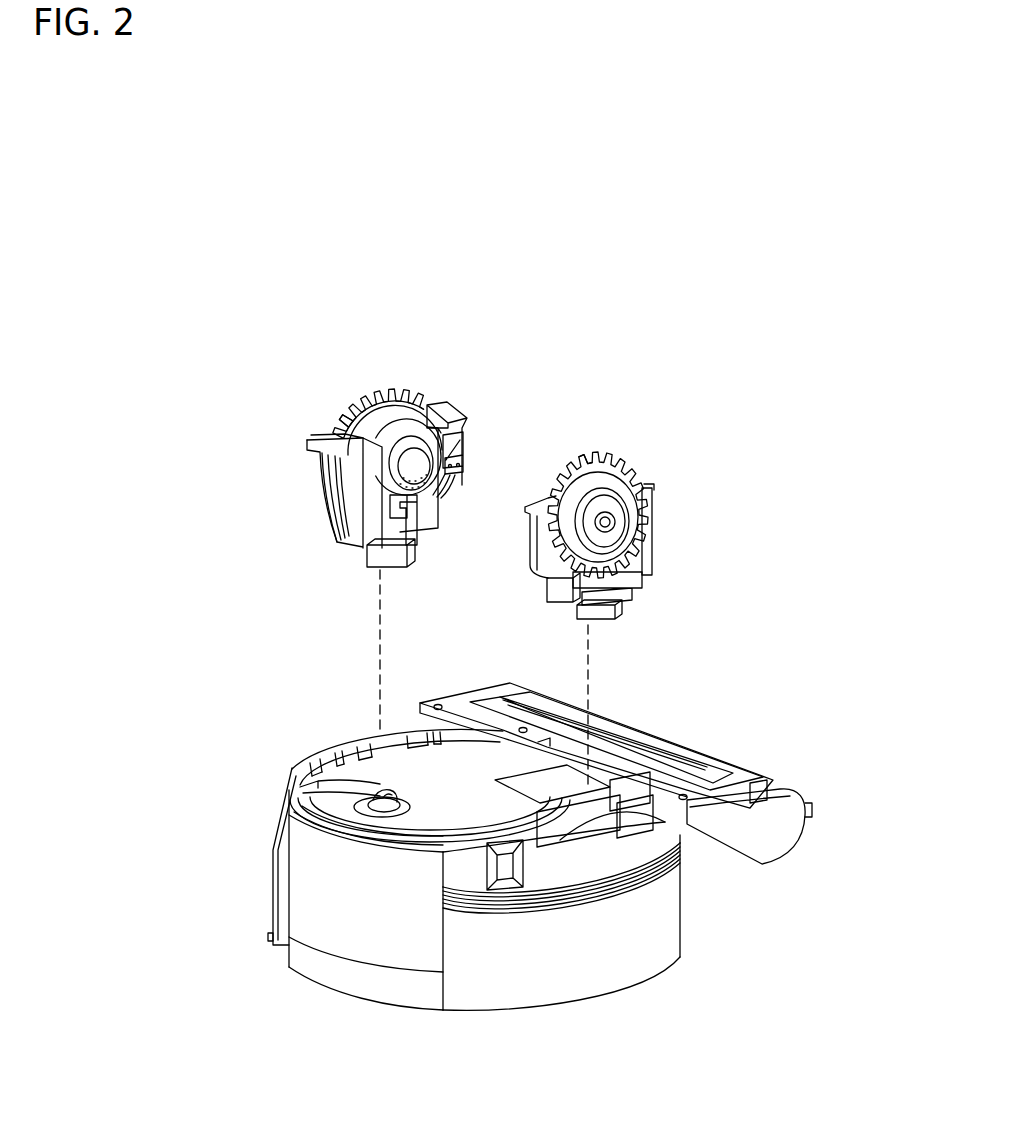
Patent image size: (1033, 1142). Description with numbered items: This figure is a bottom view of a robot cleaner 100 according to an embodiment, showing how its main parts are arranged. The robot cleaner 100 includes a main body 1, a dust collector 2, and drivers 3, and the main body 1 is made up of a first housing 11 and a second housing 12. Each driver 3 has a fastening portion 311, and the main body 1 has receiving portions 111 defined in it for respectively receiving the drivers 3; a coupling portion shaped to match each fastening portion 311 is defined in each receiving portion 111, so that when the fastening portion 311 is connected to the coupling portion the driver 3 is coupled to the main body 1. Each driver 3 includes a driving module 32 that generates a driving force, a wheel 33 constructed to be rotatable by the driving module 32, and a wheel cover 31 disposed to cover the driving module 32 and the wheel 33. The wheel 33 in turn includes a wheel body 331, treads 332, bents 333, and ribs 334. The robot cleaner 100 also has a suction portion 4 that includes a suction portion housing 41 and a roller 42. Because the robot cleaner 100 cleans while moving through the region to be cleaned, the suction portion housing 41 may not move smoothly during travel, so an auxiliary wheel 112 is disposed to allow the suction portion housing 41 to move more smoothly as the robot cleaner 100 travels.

The robot cleaner 100 is at (570, 1018).
The main body 1 is at (713, 975).
The first housing 11 is at (598, 828).
The receiving portion 111 is at (393, 745).
The auxiliary wheel 112 is at (355, 790).
The second housing 12 is at (640, 957).
The dust collector 2 is at (318, 972).
The driver 3 is at (510, 348).
The wheel cover 31 is at (372, 513).
The fastening portion 311 is at (390, 553).
The driving module 32 is at (407, 465).
The wheel 33 is at (414, 383).
The wheel body 331 is at (382, 390).
The treads 332 is at (368, 414).
The bents 333 is at (340, 436).
The ribs 334 is at (357, 425).
The suction portion 4 is at (818, 794).
The suction portion housing 41 is at (763, 860).
The roller 42 is at (706, 775).